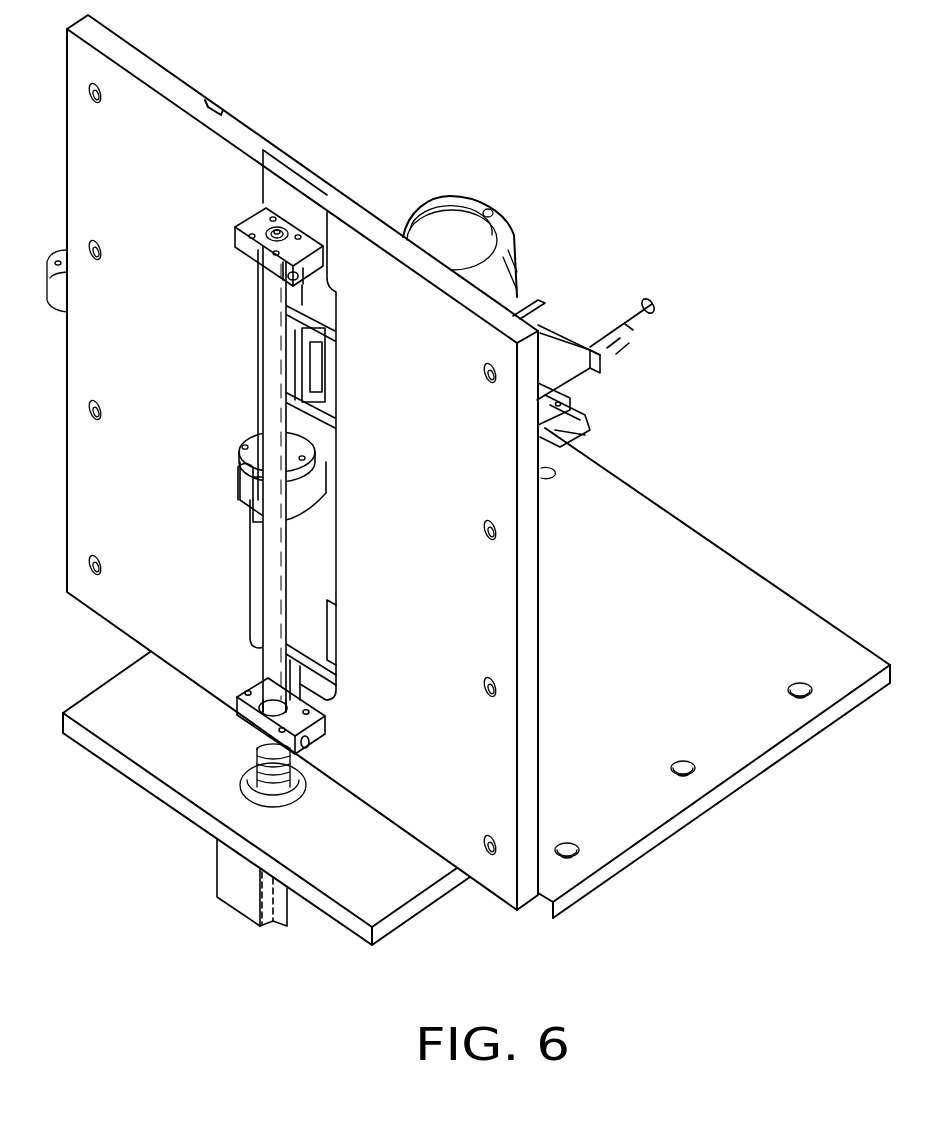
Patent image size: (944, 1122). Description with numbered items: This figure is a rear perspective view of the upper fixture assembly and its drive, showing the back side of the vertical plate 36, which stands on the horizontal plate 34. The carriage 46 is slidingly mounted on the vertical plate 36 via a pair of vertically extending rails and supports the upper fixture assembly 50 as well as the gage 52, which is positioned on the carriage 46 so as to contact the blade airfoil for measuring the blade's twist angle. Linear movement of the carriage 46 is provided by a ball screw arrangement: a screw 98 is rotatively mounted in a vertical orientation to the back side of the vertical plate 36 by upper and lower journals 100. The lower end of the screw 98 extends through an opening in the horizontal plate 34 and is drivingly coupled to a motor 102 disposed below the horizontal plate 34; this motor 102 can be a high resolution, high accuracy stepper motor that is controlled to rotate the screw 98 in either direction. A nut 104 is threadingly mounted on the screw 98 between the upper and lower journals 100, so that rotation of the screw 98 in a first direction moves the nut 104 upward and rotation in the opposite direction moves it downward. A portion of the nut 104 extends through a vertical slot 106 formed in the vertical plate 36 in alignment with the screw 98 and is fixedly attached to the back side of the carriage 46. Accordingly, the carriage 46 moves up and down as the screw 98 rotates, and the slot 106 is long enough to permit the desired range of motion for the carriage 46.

The horizontal plate 34 is at (744, 592).
The vertical plate 36 is at (118, 123).
The carriage 46 is at (322, 406).
The upper fixture assembly 50 is at (447, 202).
The gage 52 is at (567, 327).
The screw 98 is at (273, 372).
The upper and lower journals 100 is at (253, 218).
The motor 102 is at (230, 883).
The nut 104 is at (238, 483).
The vertical slot 106 is at (332, 557).